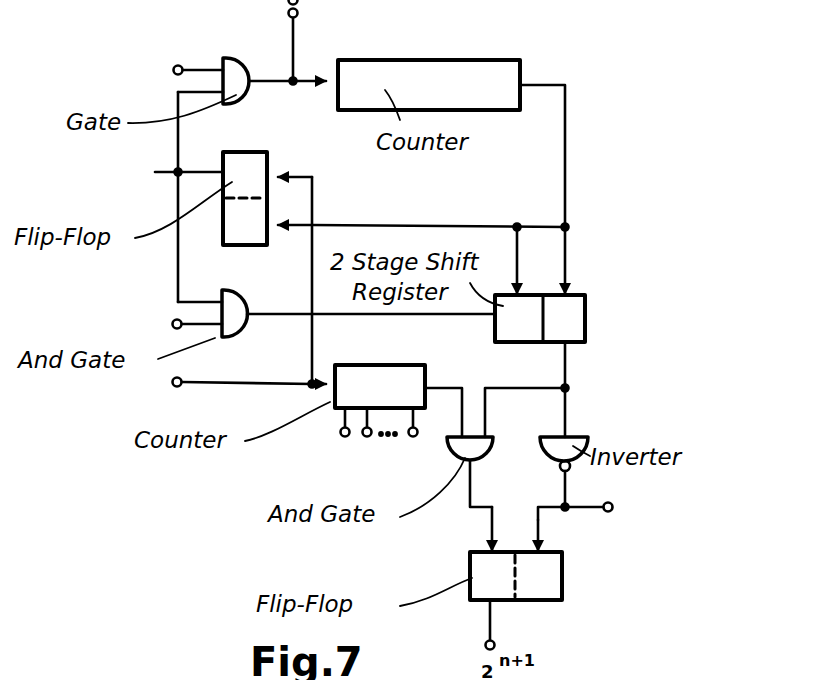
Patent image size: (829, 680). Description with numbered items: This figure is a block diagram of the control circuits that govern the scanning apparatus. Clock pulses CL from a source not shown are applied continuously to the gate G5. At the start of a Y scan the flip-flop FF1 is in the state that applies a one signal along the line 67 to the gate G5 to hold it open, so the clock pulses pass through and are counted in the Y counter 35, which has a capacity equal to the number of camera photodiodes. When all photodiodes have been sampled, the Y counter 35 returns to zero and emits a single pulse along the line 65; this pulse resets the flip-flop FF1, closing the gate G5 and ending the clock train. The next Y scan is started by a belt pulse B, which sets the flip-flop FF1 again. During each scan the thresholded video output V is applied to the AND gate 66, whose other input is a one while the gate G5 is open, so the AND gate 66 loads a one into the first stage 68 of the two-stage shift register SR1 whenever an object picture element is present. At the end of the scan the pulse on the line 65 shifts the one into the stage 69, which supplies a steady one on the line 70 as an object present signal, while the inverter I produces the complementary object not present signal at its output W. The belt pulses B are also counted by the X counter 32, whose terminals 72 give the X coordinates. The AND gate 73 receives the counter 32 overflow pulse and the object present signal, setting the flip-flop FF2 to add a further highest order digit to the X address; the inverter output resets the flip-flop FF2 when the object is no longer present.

The gate G5 is at (236, 58).
The Y counter 35 is at (538, 50).
The line 65 is at (565, 182).
The line 67 is at (177, 172).
The flip-flop FF1 is at (267, 153).
The AND gate 66 is at (243, 298).
The two-stage shift register SR1 is at (585, 296).
The first stage 68 is at (503, 344).
The second stage 69 is at (585, 342).
The line 70 is at (565, 368).
The X counter 32 is at (425, 366).
The terminals 72 is at (415, 444).
The AND gate 73 is at (493, 441).
The inverter I is at (588, 441).
The flip-flop FF2 is at (562, 553).
The clock pulses CL is at (192, 58).
The thresholded video output V is at (163, 326).
The belt pulse B is at (228, 392).
The output terminal W is at (598, 505).